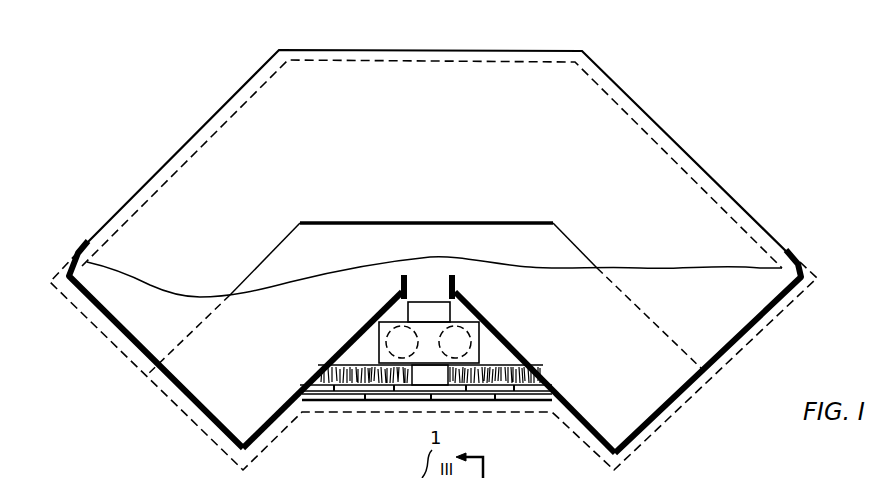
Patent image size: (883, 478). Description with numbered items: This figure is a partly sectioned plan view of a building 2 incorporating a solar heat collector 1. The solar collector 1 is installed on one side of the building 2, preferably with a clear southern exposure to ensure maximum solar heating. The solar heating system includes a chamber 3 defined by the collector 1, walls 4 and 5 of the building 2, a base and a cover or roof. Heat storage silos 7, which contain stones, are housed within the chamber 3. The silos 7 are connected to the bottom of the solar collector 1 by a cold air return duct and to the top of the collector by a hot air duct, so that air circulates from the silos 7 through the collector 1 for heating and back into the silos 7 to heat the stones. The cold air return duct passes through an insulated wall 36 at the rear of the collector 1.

The solar heat collector 1 is at (383, 403).
The building 2 is at (678, 187).
The chamber 3 is at (490, 345).
The wall 4 is at (345, 340).
The wall 5 is at (477, 307).
The heat storage silo 7 is at (386, 330).
The insulated wall 36 is at (508, 358).